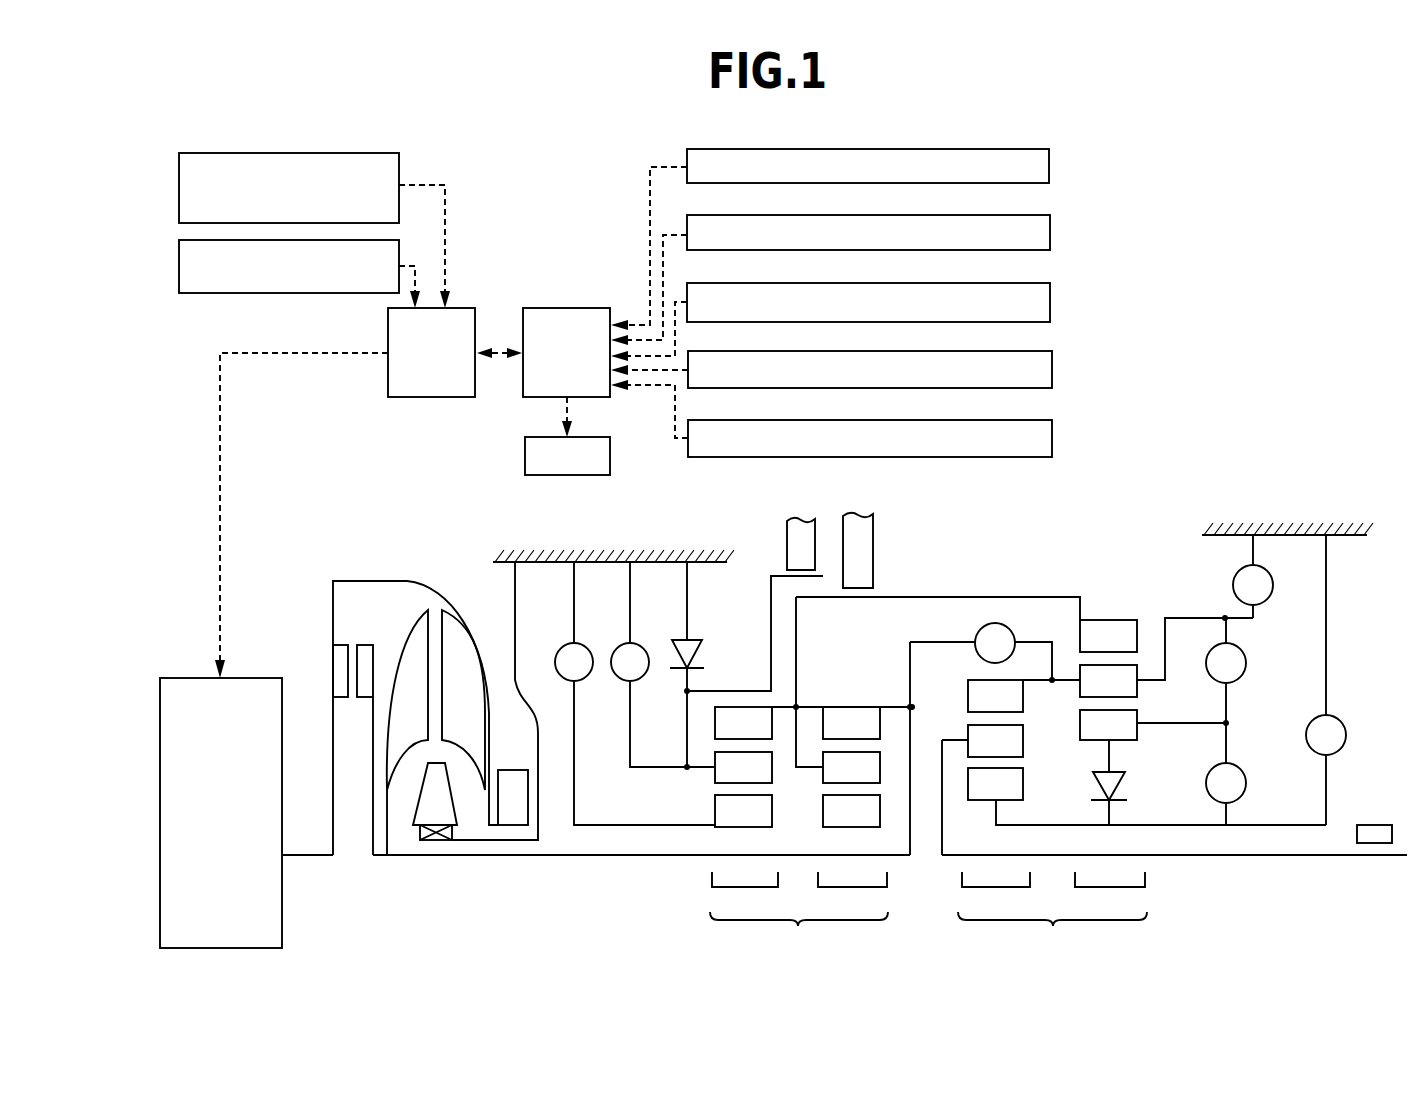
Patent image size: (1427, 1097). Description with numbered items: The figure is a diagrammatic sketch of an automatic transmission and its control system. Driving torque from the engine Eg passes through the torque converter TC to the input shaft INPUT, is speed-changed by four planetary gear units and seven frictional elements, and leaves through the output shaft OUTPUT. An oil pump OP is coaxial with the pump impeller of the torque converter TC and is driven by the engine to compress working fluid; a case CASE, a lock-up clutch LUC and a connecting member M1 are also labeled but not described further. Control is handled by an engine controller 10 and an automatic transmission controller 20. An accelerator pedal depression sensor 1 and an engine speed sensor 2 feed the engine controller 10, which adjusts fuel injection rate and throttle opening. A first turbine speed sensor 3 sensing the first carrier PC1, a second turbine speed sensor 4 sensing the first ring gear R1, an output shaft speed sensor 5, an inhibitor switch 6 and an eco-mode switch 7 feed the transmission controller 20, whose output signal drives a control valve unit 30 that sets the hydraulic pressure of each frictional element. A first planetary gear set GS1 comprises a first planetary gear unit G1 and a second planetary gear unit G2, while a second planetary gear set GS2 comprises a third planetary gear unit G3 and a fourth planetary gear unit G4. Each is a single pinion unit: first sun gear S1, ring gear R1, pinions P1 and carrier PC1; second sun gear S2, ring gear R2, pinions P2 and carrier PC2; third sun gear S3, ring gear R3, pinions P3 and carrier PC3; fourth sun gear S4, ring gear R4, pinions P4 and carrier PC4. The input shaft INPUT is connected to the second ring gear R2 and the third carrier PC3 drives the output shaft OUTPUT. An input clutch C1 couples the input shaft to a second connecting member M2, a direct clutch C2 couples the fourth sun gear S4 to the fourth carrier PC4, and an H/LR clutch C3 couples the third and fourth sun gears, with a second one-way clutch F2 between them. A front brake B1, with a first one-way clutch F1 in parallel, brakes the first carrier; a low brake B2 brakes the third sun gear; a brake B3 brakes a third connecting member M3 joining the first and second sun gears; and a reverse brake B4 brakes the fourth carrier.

The accelerator pedal depression sensor 1 is at (179, 187).
The engine speed sensor 2 is at (179, 267).
The first turbine speed sensor 3 is at (1050, 301).
The second turbine speed sensor 4 is at (1052, 369).
The output shaft speed sensor 5 is at (1052, 437).
The inhibitor switch 6 is at (1050, 233).
The eco-mode switch 7 is at (1050, 166).
The engine controller 10 is at (432, 397).
The automatic transmission controller 20 is at (560, 308).
The control valve unit 30 is at (525, 458).
The engine Eg is at (255, 678).
The torque converter TC is at (426, 561).
The lock-up clutch LUC is at (349, 627).
The oil pump OP is at (510, 770).
The transmission case CASE is at (592, 571).
The input shaft INPUT is at (548, 857).
The output shaft OUTPUT is at (1280, 857).
The front brake B1 is at (663, 664).
The low brake B2 is at (1326, 680).
The 2346 brake B3 is at (635, 693).
The reverse brake B4 is at (1253, 576).
The input clutch C1 is at (981, 739).
The direct clutch C2 is at (1226, 690).
The H/LR clutch C3 is at (1226, 794).
The first one-way clutch F1 is at (699, 626).
The second one-way clutch F2 is at (1138, 787).
The first planetary gear unit G1 is at (745, 892).
The second planetary gear unit G2 is at (852, 892).
The third planetary gear unit G3 is at (996, 892).
The fourth planetary gear unit G4 is at (1110, 892).
The first planetary gear set GS1 is at (799, 931).
The second planetary gear set GS2 is at (1052, 931).
The first ring gear R1 is at (743, 723).
The second ring gear R2 is at (851, 723).
The third ring gear R3 is at (995, 696).
The fourth ring gear R4 is at (1108, 636).
The first pinions P1 is at (743, 767).
The second pinions P2 is at (851, 767).
The third pinions P3 is at (995, 741).
The fourth pinions P4 is at (1108, 681).
The first sun gear S1 is at (743, 811).
The second sun gear S2 is at (851, 811).
The third sun gear S3 is at (995, 784).
The fourth sun gear S4 is at (1108, 725).
The first pinion carrier PC1 is at (703, 767).
The second pinion carrier PC2 is at (813, 767).
The third pinion carrier PC3 is at (958, 740).
The fourth pinion carrier PC4 is at (1140, 681).
The first connecting member M1 is at (977, 597).
The second connecting member M2 is at (1040, 682).
The third connecting member M3 is at (807, 828).